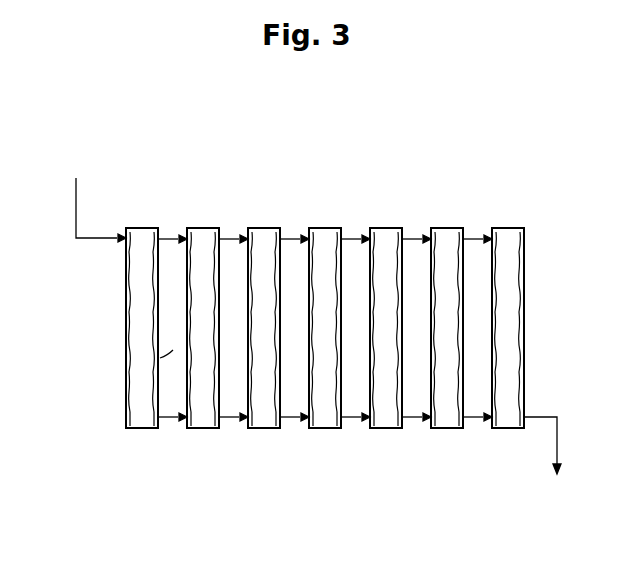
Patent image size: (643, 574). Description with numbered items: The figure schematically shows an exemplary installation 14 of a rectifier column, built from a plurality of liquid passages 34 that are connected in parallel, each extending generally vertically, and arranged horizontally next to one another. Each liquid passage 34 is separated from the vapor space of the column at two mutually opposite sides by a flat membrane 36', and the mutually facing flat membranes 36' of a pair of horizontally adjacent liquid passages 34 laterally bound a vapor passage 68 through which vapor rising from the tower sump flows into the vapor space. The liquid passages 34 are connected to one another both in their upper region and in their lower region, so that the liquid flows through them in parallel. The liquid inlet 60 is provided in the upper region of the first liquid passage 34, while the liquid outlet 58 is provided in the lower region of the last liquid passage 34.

The installation 14 is at (326, 264).
The liquid passage 34 is at (142, 332).
The flat membrane 36' is at (325, 324).
The vapor passage 68 is at (173, 350).
The liquid inlet 60 is at (120, 232).
The liquid outlet 58 is at (560, 435).